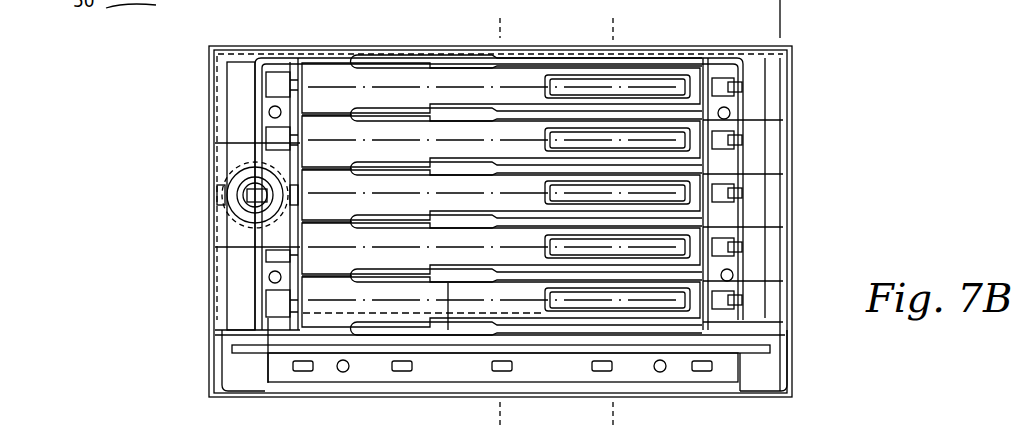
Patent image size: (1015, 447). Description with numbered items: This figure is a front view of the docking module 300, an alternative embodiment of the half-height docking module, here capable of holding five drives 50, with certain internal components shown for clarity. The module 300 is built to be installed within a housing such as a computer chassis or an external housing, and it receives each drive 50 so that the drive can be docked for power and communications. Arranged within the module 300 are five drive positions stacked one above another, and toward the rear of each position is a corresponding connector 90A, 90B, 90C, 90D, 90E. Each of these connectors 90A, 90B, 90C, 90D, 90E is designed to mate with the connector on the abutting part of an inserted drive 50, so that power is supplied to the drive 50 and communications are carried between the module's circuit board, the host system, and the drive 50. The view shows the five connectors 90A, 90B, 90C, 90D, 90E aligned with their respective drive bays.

The docking module 300 is at (145, 191).
The disk drive 50 is at (322, 76).
The connector 90A is at (584, 80).
The connector 90B is at (683, 146).
The connector 90C is at (683, 200).
The connector 90D is at (683, 254).
The connector 90E is at (683, 308).